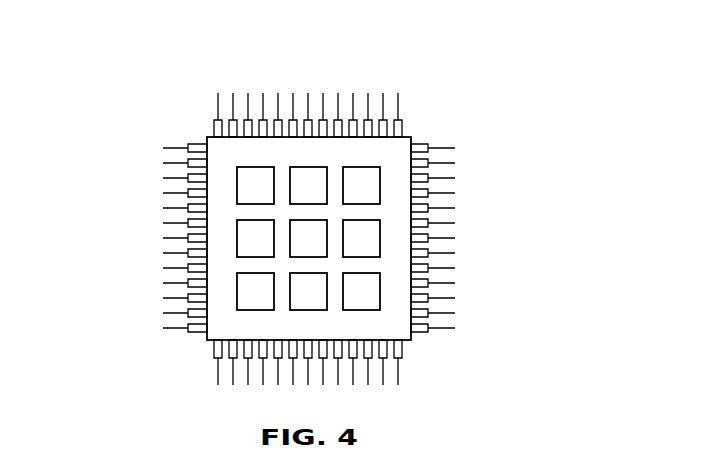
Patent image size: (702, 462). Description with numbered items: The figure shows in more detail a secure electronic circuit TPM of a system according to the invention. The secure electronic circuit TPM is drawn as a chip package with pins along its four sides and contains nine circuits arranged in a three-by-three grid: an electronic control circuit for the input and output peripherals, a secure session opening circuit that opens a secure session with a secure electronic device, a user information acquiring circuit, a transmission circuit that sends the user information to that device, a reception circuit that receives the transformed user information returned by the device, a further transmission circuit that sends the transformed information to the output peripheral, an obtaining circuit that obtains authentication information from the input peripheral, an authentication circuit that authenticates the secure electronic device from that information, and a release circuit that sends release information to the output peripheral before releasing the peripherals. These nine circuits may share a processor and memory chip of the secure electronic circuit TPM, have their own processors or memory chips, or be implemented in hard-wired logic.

The secure electronic circuit TPM is at (425, 98).